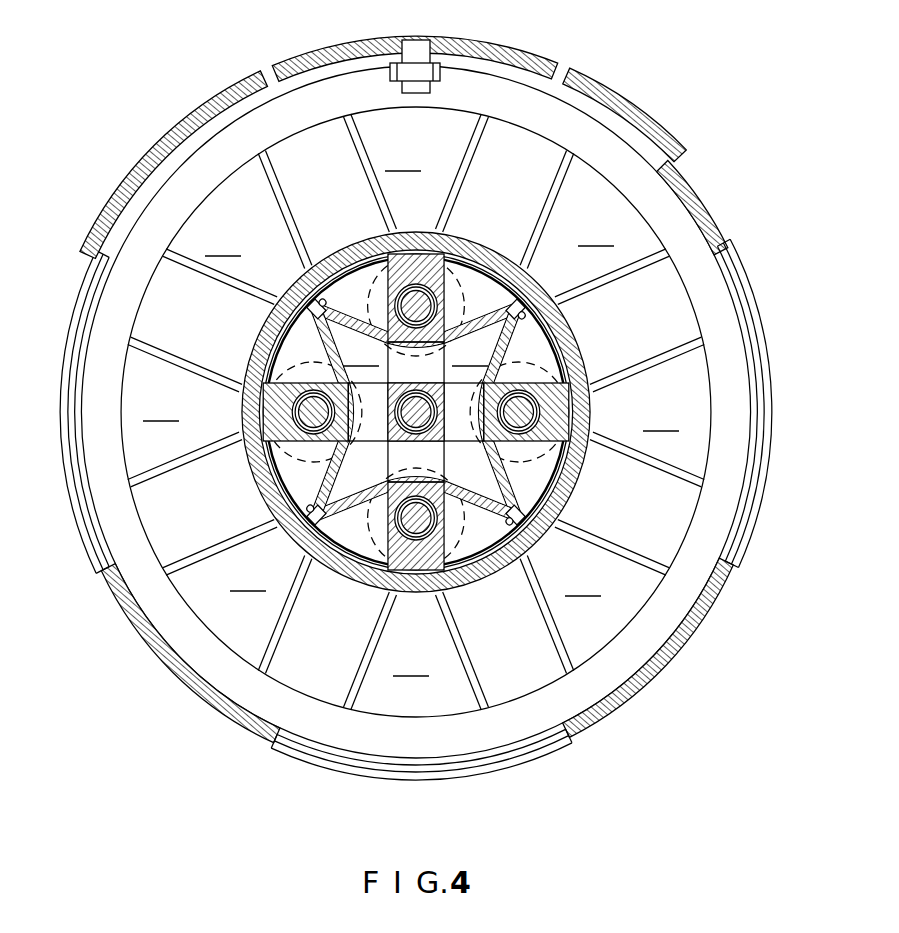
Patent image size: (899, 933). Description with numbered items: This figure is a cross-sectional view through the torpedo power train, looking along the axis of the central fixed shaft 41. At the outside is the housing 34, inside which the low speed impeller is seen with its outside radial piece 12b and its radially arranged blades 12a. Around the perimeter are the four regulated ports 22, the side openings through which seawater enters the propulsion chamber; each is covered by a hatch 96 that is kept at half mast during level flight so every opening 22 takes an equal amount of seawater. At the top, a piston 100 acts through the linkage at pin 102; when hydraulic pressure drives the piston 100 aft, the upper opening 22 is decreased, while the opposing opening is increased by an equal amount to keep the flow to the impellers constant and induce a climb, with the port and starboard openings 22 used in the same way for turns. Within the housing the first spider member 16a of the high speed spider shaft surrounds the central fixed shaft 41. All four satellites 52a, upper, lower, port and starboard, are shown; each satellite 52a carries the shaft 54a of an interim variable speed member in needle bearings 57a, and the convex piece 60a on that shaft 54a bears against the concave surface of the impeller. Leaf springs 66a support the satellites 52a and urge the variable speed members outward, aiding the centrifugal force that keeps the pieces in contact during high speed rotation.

The blades 12a is at (416, 412).
The outside radial piece 12b is at (415, 412).
The first spider member 16a is at (379, 383).
The regulated port 22 is at (413, 408).
The housing 34 is at (290, 252).
The central fixed shaft 41 is at (421, 427).
The satellite 52a is at (420, 416).
The shaft 54a is at (413, 408).
The needle bearing 57a is at (424, 412).
The convex piece 60a is at (416, 417).
The leaf spring 66a is at (414, 414).
The hatch 96 is at (416, 52).
The piston 100 is at (404, 58).
The pin 102 is at (420, 72).